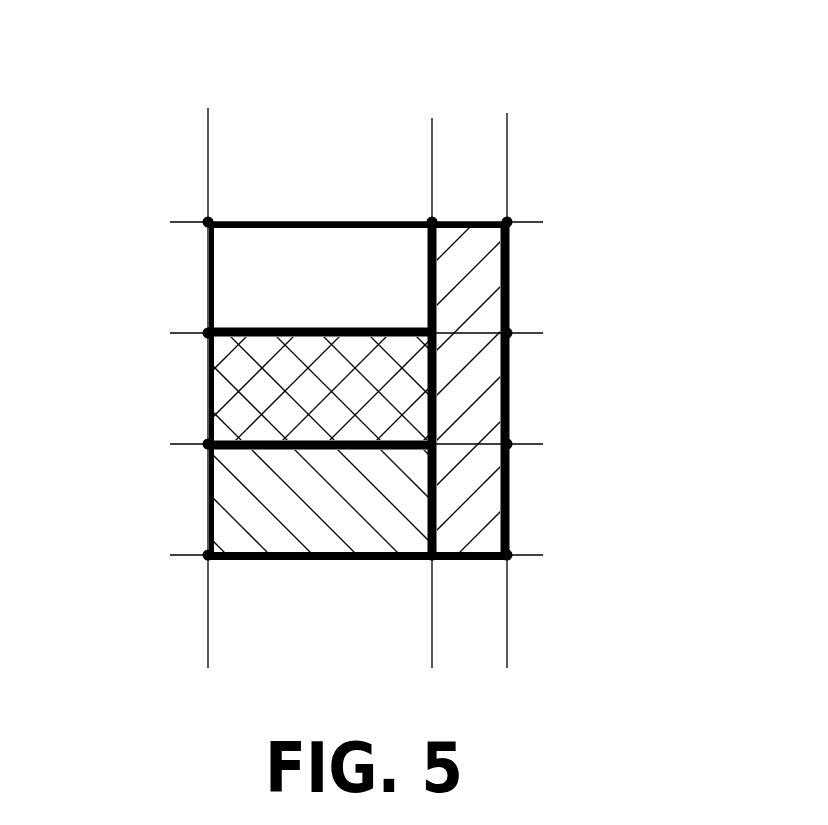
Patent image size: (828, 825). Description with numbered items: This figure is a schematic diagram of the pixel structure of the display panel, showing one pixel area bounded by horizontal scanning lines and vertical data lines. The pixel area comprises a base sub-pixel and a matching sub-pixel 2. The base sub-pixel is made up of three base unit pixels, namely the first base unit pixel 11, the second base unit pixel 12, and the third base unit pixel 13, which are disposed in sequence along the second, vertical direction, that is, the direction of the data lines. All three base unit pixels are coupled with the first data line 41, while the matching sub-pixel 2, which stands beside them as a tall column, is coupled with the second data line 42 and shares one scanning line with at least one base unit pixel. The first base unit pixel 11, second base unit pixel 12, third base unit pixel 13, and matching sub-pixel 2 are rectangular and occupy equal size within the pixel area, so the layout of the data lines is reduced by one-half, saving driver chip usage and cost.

The matching sub-pixel 2 is at (470, 286).
The first base unit pixel 11 is at (245, 548).
The second base unit pixel 12 is at (245, 436).
The third base unit pixel 13 is at (245, 315).
The first data line 41 is at (208, 112).
The second data line 42 is at (432, 118).